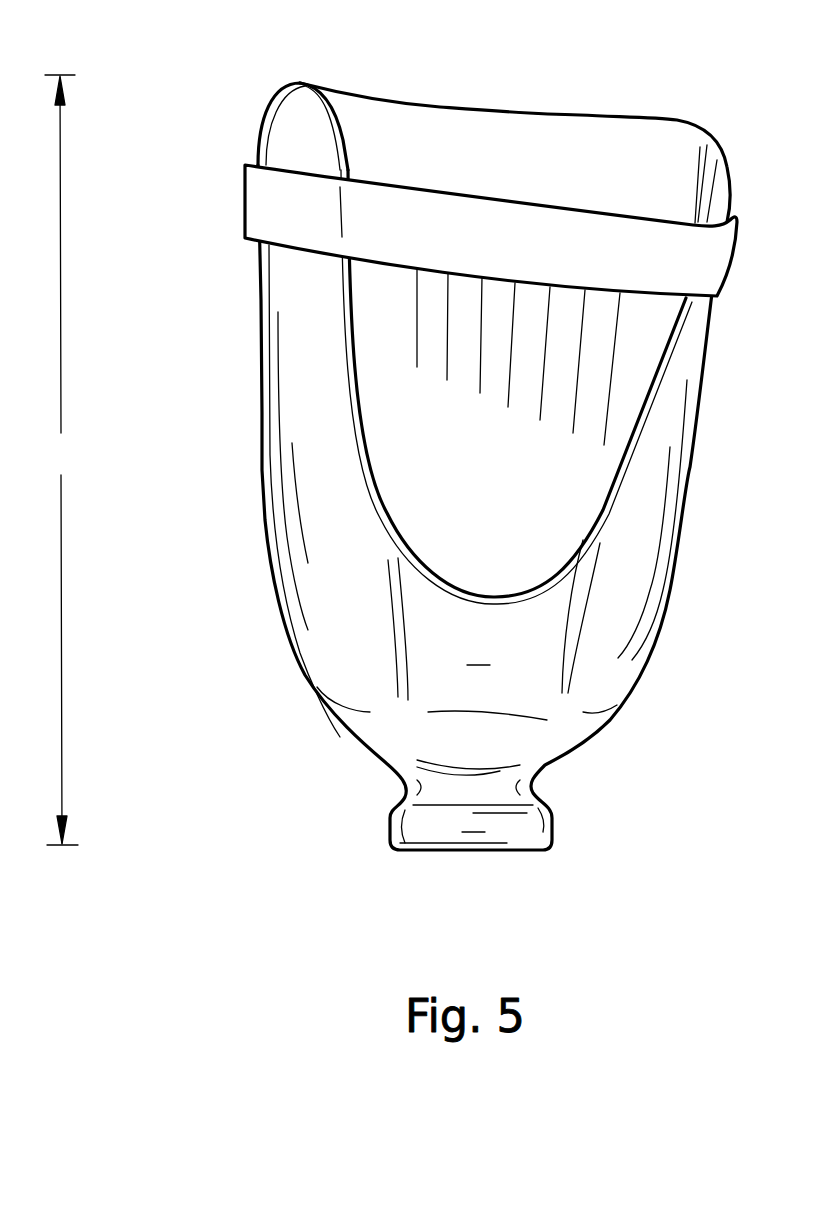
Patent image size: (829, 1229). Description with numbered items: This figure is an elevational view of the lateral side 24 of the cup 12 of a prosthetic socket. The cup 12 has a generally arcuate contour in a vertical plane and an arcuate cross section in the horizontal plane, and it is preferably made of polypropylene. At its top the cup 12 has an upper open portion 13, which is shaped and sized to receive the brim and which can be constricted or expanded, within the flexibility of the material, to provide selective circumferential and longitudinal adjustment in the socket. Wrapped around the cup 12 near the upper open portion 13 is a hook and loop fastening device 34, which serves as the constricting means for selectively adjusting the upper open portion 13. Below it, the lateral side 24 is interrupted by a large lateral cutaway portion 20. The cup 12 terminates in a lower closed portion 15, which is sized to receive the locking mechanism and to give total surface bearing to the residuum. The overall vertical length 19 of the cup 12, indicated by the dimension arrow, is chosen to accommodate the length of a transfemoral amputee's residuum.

The cup 12 is at (262, 408).
The upper open portion 13 is at (665, 157).
The lower closed portion 15 is at (473, 832).
The vertical length 19 is at (61, 460).
The lateral cutaway portion 20 is at (605, 510).
The lateral side 24 is at (480, 667).
The hook and loop fastening device 34 is at (267, 200).